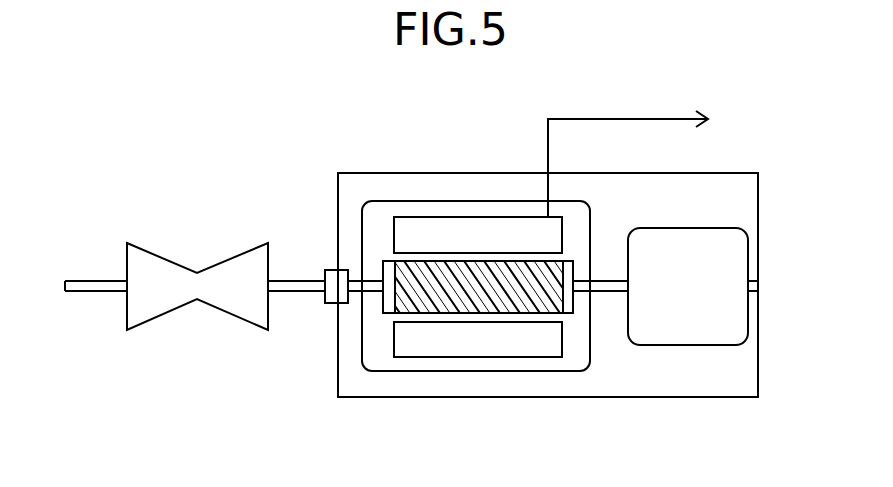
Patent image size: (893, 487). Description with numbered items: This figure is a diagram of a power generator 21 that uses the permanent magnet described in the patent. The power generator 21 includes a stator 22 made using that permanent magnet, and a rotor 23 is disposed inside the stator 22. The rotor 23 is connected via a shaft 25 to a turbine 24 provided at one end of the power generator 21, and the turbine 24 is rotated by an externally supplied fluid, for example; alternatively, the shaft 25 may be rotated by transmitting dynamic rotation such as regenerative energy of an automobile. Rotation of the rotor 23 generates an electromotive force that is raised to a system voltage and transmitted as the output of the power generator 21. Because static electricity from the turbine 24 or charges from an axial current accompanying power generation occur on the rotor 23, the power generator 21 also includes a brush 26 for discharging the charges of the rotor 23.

The power generator 21 is at (382, 173).
The stator 22 is at (448, 348).
The rotor 23 is at (492, 305).
The turbine 24 is at (238, 252).
The shaft 25 is at (303, 293).
The brush 26 is at (678, 330).